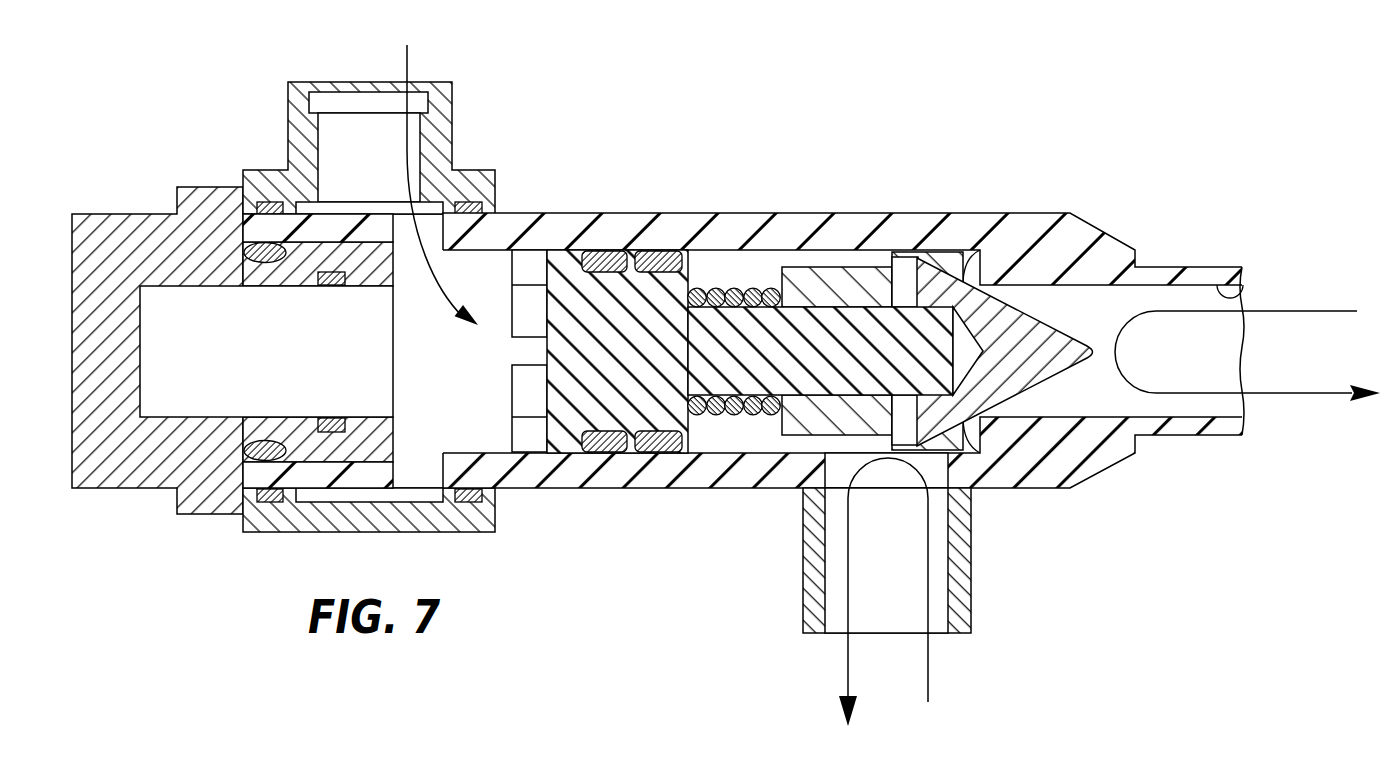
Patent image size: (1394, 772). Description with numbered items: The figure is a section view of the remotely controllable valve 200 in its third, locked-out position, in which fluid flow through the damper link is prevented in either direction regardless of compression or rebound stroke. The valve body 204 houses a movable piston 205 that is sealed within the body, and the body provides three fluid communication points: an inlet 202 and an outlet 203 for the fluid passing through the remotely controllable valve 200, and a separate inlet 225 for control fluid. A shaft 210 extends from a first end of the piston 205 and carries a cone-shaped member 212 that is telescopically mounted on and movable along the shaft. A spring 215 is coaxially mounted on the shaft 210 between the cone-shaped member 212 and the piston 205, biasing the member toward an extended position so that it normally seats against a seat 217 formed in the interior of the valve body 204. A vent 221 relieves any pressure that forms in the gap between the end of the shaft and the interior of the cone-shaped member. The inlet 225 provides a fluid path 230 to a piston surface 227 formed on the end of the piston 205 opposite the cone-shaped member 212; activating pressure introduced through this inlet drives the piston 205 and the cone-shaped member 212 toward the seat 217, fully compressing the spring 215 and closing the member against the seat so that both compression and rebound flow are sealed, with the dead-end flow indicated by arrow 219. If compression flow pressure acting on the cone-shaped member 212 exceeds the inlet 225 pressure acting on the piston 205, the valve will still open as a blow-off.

The remotely controllable valve 200 is at (1108, 169).
The inlet 202 is at (1245, 298).
The outlet 203 is at (938, 593).
The valve body 204 is at (93, 228).
The piston 205 is at (633, 327).
The shaft 210 is at (743, 328).
The cone-shaped member 212 is at (975, 303).
The spring 215 is at (740, 416).
The seat 217 is at (960, 268).
The arrow 219 is at (930, 668).
The vent 221 is at (903, 283).
The inlet 225 is at (320, 140).
The piston surface 227 is at (519, 354).
The fluid path 230 is at (410, 63).